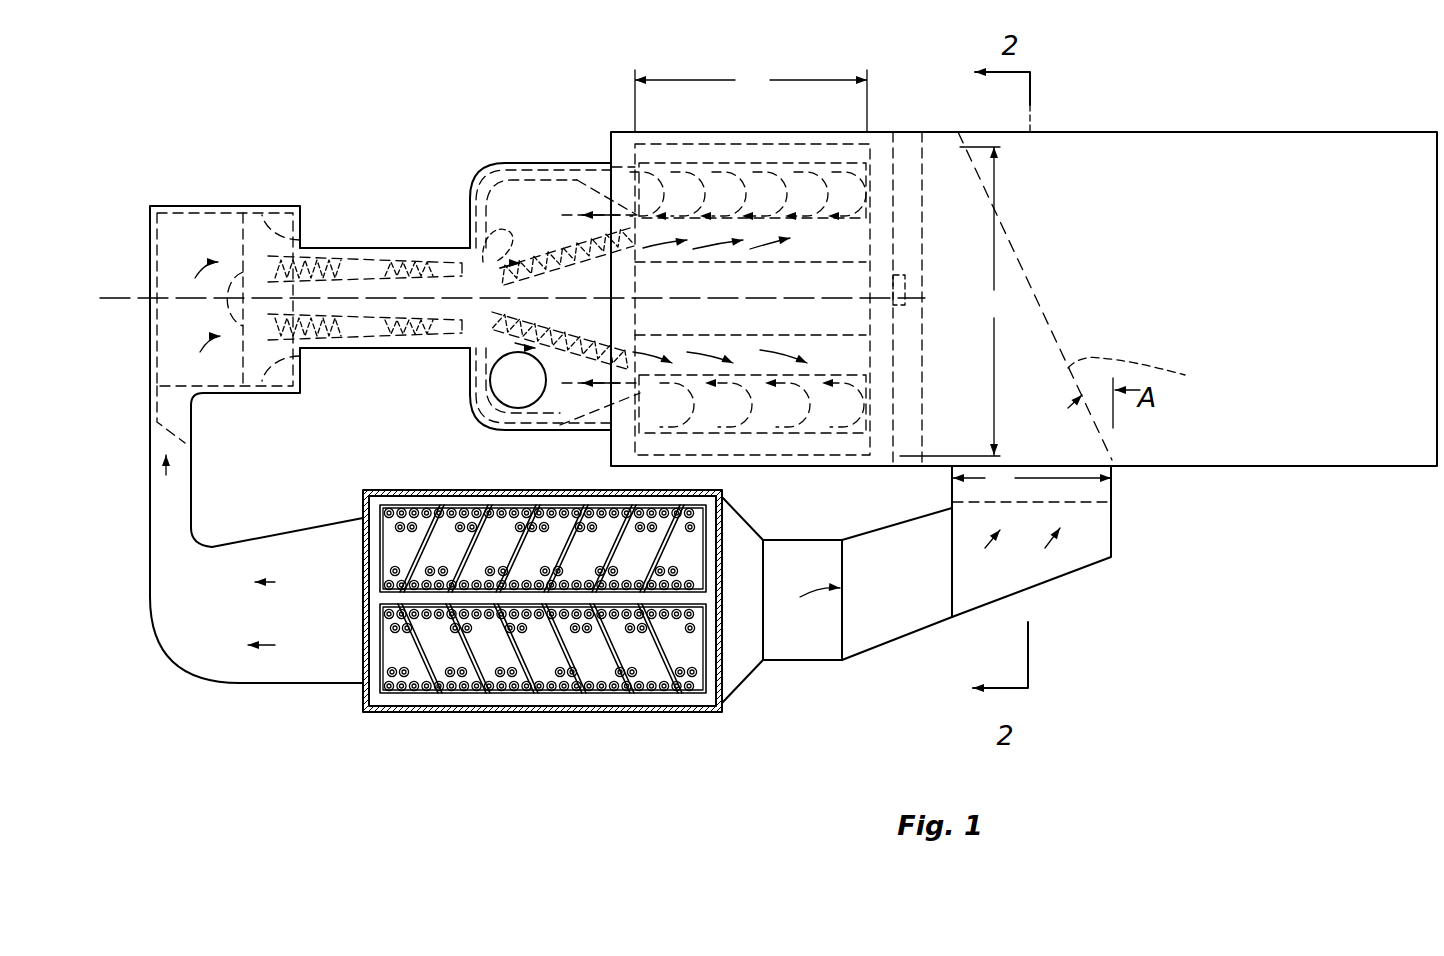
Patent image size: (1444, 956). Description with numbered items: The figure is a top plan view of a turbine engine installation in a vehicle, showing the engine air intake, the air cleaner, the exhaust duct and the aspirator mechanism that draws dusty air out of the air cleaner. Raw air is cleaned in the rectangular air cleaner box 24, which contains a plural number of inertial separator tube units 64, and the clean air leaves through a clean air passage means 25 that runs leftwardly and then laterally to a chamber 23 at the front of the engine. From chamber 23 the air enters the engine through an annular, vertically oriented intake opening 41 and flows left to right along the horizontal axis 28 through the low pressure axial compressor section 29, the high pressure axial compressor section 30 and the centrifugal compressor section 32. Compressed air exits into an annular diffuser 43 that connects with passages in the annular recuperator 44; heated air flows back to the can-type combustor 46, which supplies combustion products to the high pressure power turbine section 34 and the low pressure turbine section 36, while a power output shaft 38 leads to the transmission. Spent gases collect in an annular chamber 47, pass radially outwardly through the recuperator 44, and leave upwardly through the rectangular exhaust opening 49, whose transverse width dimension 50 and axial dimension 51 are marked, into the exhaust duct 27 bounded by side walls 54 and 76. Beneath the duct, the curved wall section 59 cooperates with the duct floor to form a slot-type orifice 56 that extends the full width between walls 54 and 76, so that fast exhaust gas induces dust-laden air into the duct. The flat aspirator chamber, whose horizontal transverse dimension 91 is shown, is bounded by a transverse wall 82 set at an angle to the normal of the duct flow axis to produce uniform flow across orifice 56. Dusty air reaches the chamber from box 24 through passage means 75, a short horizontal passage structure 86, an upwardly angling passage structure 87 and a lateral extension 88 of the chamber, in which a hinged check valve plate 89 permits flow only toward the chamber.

The chamber 23 is at (178, 212).
The air cleaner box 24 is at (600, 713).
The clean air passage means 25 is at (182, 478).
The exhaust duct 27 is at (1172, 458).
The horizontal axis 28 is at (118, 292).
The low pressure axial compressor section 29 is at (321, 352).
The high pressure axial compressor section 30 is at (400, 340).
The centrifugal compressor section 32 is at (495, 260).
The high pressure power turbine section 34 is at (567, 263).
The low pressure turbine section 36 is at (561, 318).
The power output shaft 38 is at (905, 292).
The intake opening 41 is at (238, 218).
The annular diffuser 43 is at (480, 197).
The annular recuperator 44 is at (757, 160).
The can-type combustor 46 is at (506, 398).
The annular chamber 47 is at (880, 250).
The exhaust opening 49 is at (688, 145).
The transverse width dimension 50 is at (958, 301).
The axial dimension 51 is at (751, 97).
The side wall 54 is at (1142, 470).
The slot-type orifice 56 is at (925, 407).
The curved wall section 59 is at (925, 337).
The inertial separator tube units 64 is at (426, 505).
The passage means 75 is at (745, 682).
The side wall 76 is at (1113, 132).
The transverse wall 82 is at (1144, 382).
The short horizontal passage structure 86 is at (800, 662).
The upwardly angling passage structure 87 is at (877, 628).
The lateral extension 88 is at (1072, 560).
The check valve plate 89 is at (1044, 500).
The horizontal transverse dimension 91 is at (1032, 477).